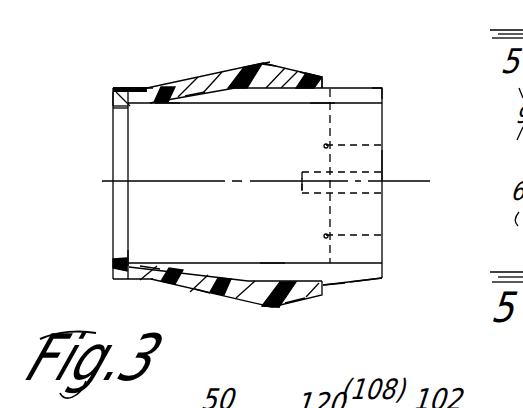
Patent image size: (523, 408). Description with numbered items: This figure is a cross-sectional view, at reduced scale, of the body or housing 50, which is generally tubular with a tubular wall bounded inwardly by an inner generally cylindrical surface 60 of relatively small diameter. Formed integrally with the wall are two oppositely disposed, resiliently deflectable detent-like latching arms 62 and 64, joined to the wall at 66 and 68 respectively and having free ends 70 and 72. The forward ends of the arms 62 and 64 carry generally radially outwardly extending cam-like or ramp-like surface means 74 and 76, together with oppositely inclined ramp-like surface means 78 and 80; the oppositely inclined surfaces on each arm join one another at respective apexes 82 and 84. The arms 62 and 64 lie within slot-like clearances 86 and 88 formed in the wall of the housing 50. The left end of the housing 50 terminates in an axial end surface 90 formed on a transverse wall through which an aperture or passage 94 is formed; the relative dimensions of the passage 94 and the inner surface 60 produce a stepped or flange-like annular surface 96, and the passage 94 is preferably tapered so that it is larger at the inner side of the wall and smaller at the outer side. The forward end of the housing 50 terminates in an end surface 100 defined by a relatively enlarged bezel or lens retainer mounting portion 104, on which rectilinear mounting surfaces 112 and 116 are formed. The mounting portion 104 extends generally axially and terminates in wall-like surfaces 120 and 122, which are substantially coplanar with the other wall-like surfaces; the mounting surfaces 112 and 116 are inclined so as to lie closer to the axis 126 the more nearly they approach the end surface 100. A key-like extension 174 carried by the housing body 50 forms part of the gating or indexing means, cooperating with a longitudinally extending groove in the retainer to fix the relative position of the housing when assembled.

The body or housing 50 is at (139, 85).
The inner generally cylindrical surface 60 is at (151, 104).
The latching arm 62 is at (170, 291).
The latching arm 64 is at (248, 62).
The joint of arm to wall 66 is at (152, 266).
The joint of arm to wall 68 is at (168, 105).
The free end 70 is at (328, 288).
The free end 72 is at (325, 85).
The cam-like or ramp-like surface means 74 is at (295, 304).
The cam-like or ramp-like surface means 76 is at (321, 74).
The oppositely inclined cam-like or ramp-like surface means 78 is at (203, 291).
The oppositely inclined cam-like or ramp-like surface means 80 is at (188, 93).
The apex 82 is at (270, 307).
The apex 84 is at (269, 62).
The slot-like clearance 86 is at (272, 243).
The slot-like clearance 88 is at (320, 98).
The axial end surface 90 is at (113, 98).
The aperture or passage 94 is at (113, 115).
The stepped or flange-like annular surface 96 is at (128, 263).
The end surface 100 is at (384, 166).
The bezel or lens retainer mounting portion 104 is at (375, 87).
The rectilinear mounting surface 112 is at (357, 284).
The rectilinear mounting surface 116 is at (347, 93).
The wall-like surface 120 is at (385, 143).
The wall-like surface 122 is at (383, 236).
The axis 126 is at (386, 185).
The key-like extension 174 is at (328, 189).